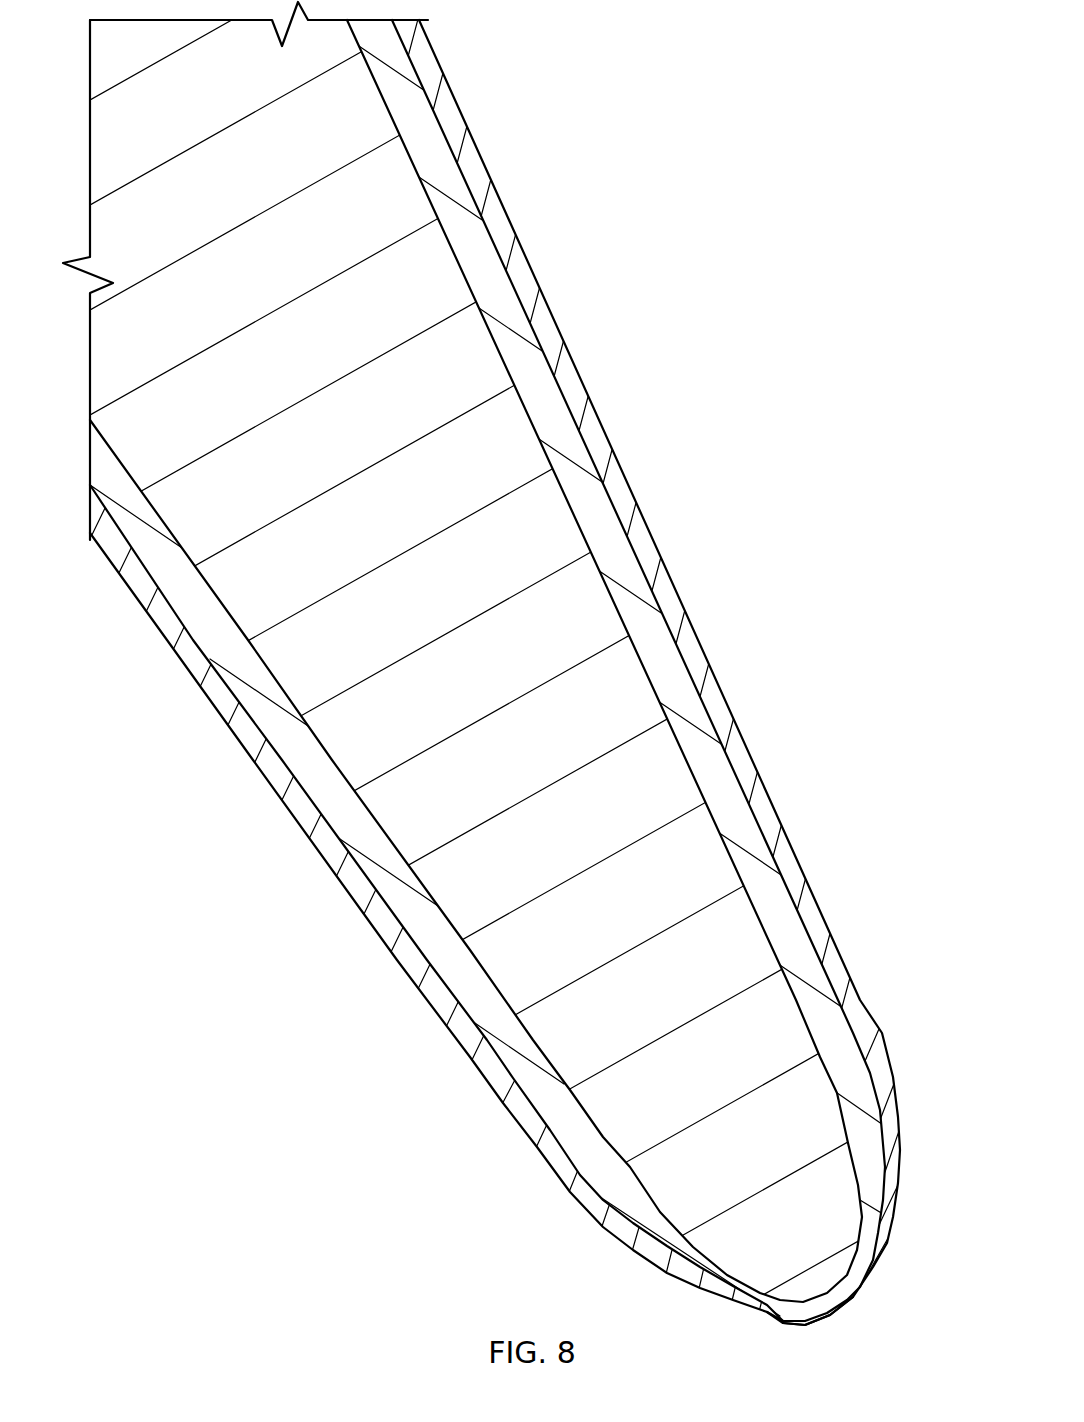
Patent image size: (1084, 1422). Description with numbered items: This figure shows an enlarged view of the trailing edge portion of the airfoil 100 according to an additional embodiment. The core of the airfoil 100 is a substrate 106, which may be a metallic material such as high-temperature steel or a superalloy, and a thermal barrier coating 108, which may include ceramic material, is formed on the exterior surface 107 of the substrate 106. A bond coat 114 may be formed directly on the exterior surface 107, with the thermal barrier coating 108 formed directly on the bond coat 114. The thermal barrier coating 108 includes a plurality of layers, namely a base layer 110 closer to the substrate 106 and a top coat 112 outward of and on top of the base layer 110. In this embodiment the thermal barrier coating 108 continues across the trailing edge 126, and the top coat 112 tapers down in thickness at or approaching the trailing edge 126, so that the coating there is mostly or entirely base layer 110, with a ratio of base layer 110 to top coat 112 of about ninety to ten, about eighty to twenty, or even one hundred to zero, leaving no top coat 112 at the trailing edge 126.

The airfoil 100 is at (722, 270).
The substrate 106 is at (243, 195).
The exterior surface 107 is at (625, 622).
The thermal barrier coating 108 is at (550, 1200).
The base layer 110 is at (463, 240).
The top coat 112 is at (592, 437).
The bond coat 114 is at (720, 833).
The trailing edge 126 is at (803, 1325).